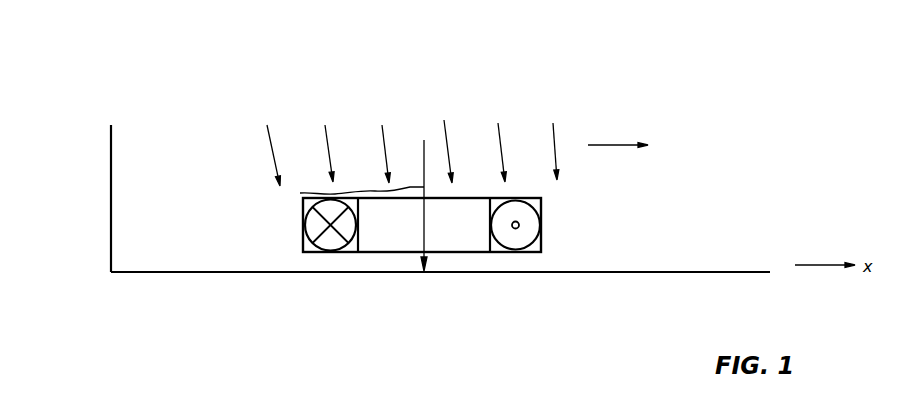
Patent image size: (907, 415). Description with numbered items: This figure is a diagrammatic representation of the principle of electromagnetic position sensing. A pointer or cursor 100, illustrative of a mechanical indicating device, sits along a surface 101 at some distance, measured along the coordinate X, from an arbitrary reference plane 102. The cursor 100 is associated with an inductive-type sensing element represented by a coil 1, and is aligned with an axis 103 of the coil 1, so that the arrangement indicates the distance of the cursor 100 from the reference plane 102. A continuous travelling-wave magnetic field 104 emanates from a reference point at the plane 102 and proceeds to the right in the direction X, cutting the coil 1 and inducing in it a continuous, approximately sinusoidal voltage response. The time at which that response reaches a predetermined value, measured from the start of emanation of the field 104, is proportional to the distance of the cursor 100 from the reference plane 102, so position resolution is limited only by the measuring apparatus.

The coil 1 is at (533, 197).
The pointer or cursor 100 is at (428, 257).
The surface 101 is at (618, 274).
The reference plane 102 is at (111, 178).
The axis 103 is at (300, 193).
The travelling-wave magnetic field 104 is at (522, 103).